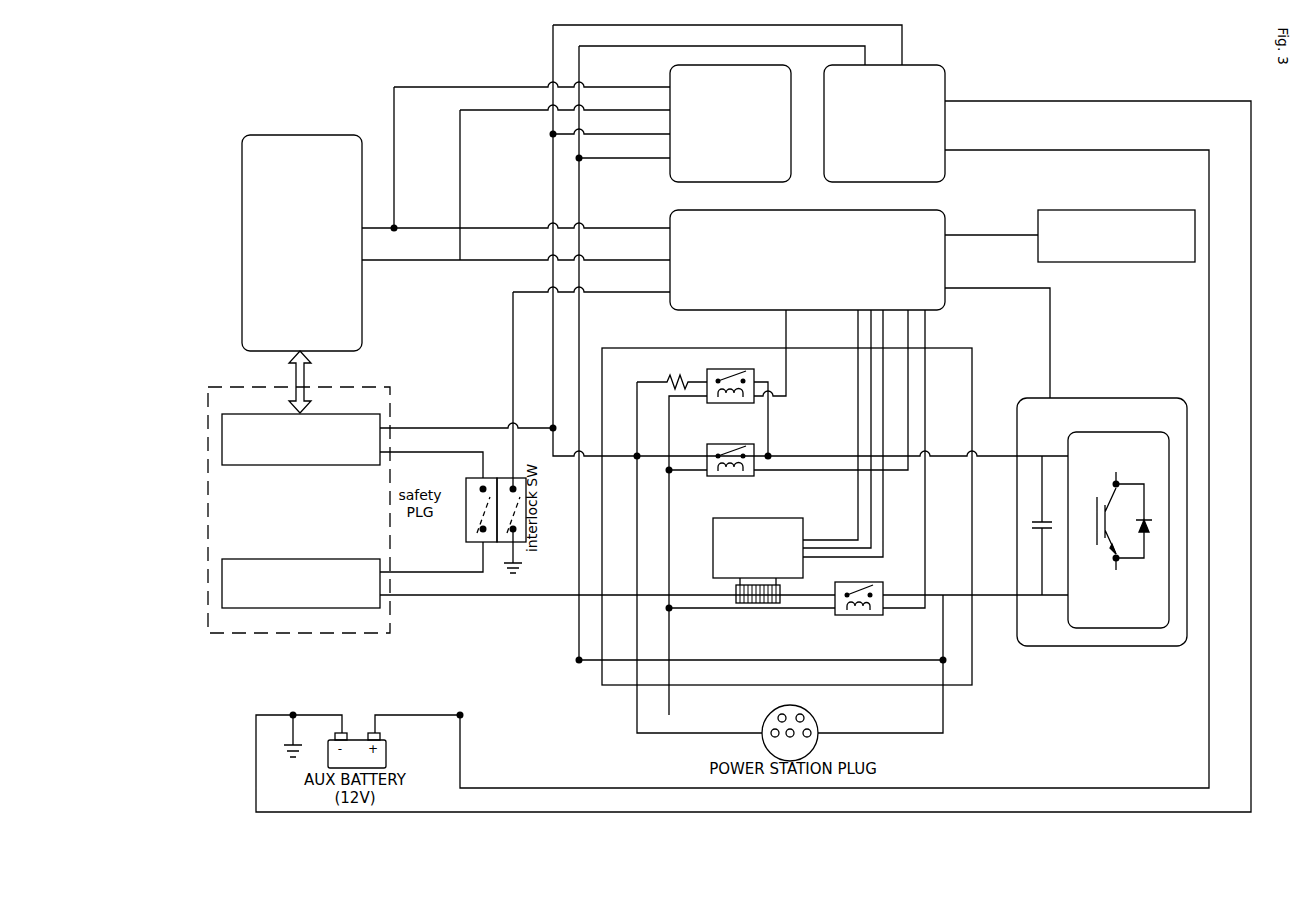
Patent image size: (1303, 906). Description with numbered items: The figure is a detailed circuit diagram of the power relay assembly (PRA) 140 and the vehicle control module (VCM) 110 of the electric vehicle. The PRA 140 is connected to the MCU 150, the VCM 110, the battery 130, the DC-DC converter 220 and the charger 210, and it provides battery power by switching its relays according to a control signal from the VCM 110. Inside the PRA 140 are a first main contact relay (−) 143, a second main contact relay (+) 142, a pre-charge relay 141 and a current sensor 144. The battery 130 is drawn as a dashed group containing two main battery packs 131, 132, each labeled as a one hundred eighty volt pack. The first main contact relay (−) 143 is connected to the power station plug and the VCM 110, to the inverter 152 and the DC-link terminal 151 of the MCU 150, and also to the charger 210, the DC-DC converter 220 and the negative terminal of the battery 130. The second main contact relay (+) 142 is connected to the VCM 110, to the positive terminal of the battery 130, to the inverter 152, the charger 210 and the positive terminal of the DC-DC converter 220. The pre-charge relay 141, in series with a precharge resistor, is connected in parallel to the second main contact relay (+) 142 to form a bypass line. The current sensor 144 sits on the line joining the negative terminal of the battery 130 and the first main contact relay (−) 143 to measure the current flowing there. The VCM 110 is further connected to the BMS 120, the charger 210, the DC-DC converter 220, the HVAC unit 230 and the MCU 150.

The vehicle control module (VCM) 110 is at (807, 260).
The BMS 120 is at (302, 243).
The battery 130 is at (380, 387).
The first main battery pack 131 is at (348, 413).
The second main battery pack 132 is at (355, 558).
The power relay assembly (PRA) 140 is at (787, 506).
The pre-charge relay 141 is at (707, 388).
The second main contact relay (+) 142 is at (760, 479).
The first main contact relay (−) 143 is at (835, 618).
The current sensor 144 is at (758, 560).
The MCU 150 is at (1102, 511).
The DC-link terminal 151 is at (1040, 501).
The inverter 152 is at (1118, 530).
The charger 210 is at (730, 123).
The DC-DC converter 220 is at (884, 123).
The heating ventilation air-conditioning (HVAC) unit 230 is at (1116, 236).